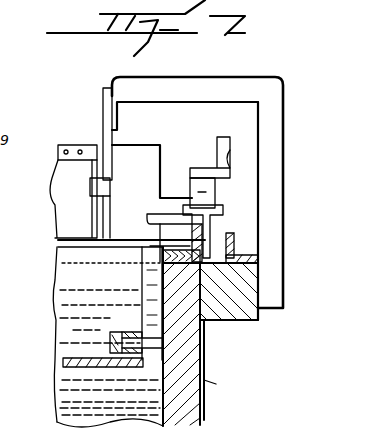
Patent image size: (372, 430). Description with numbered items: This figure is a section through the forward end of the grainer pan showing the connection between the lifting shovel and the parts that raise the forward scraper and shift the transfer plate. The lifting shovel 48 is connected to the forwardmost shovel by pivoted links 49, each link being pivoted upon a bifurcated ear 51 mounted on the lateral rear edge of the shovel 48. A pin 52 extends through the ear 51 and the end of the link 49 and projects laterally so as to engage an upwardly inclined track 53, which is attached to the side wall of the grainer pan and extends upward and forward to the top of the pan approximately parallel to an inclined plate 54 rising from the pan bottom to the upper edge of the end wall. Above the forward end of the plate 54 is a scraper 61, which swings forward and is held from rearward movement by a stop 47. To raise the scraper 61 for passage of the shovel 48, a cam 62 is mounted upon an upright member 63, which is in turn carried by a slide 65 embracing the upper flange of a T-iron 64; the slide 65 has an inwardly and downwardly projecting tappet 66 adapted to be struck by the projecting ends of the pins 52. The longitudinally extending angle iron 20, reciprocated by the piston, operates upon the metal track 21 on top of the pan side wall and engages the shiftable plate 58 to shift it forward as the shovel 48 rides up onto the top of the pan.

The angle iron 20 is at (258, 262).
The metal track 21 is at (162, 262).
The inner housing wall 47 is at (145, 151).
The lifting shovel 48 is at (66, 360).
The pivoted link 49 is at (139, 303).
The ear 51 is at (120, 332).
The pin 52 is at (205, 343).
The upwardly inclined track 53 is at (220, 388).
The inclined plate 54 is at (70, 320).
The shiftable plate 58 is at (106, 248).
The scraper 61 is at (68, 207).
The cam 62 is at (201, 166).
The upright member 63 is at (233, 166).
The T-iron 64 is at (234, 227).
The slide 65 is at (217, 206).
The tappet 66 is at (147, 222).